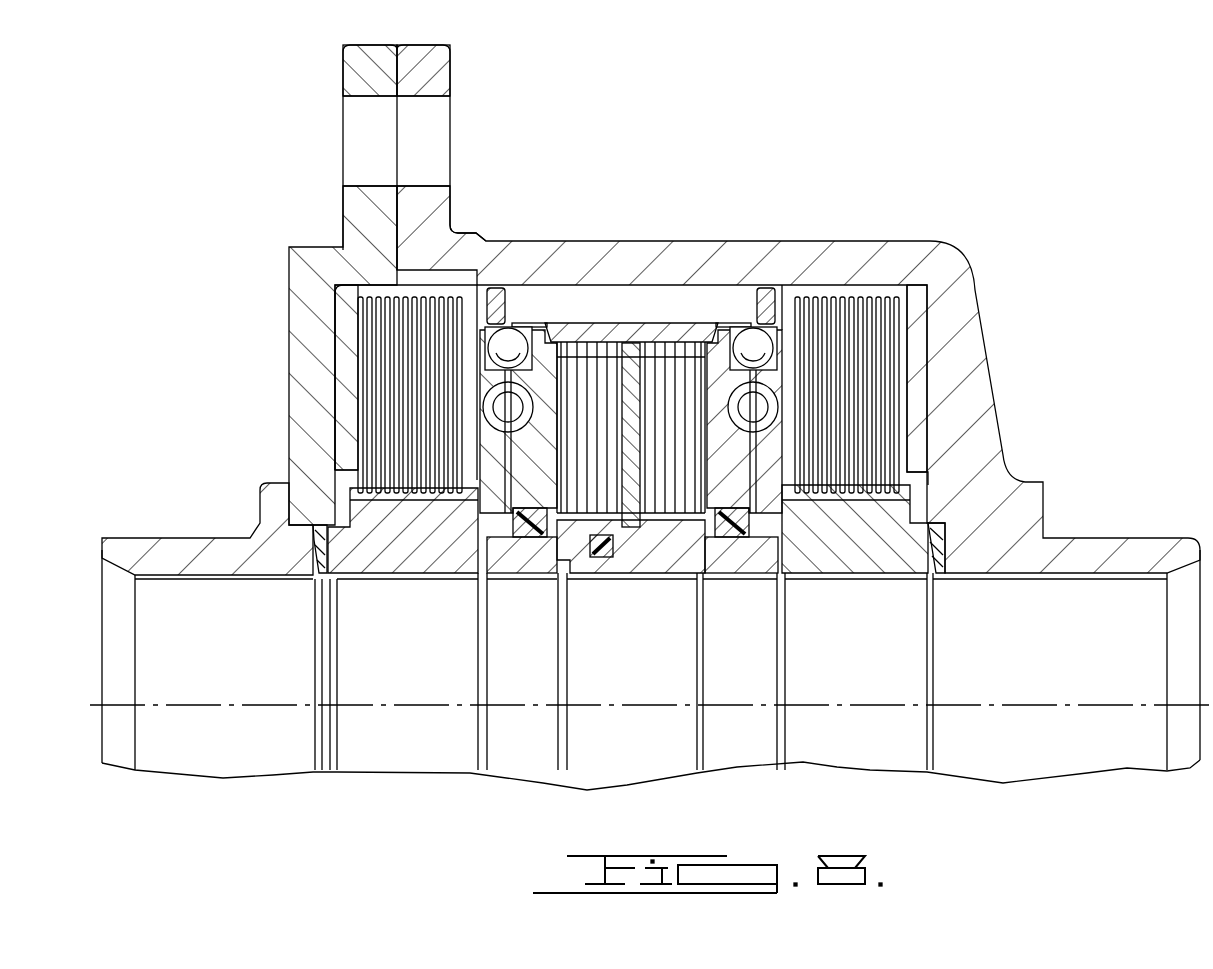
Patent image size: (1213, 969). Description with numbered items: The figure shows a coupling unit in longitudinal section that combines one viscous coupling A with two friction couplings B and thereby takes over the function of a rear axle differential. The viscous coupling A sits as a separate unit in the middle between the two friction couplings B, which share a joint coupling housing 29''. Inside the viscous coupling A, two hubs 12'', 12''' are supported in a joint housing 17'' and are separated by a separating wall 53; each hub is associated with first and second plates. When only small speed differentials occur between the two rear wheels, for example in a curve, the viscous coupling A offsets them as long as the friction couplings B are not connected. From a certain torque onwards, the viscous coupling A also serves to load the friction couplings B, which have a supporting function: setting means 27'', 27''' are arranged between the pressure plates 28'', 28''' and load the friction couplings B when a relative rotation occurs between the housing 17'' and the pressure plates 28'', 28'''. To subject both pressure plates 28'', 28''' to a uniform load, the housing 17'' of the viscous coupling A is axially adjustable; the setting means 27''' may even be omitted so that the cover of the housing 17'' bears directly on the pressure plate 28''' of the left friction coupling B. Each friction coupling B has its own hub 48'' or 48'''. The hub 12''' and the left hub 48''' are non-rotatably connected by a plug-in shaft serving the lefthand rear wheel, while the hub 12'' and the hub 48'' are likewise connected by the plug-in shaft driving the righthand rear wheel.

The friction coupling B is at (372, 287).
The pressure plate 28''' is at (514, 250).
The setting means 27''' is at (557, 351).
The housing 17'' is at (631, 295).
The setting means 27'' is at (752, 351).
The pressure plate 28'' is at (799, 232).
The coupling housing 29'' is at (798, 376).
The hub 48''' is at (403, 571).
The hub 12''' is at (522, 588).
The separating wall 53 is at (630, 500).
The viscous coupling A is at (682, 527).
The hub 12'' is at (741, 579).
The hub 48'' is at (855, 562).